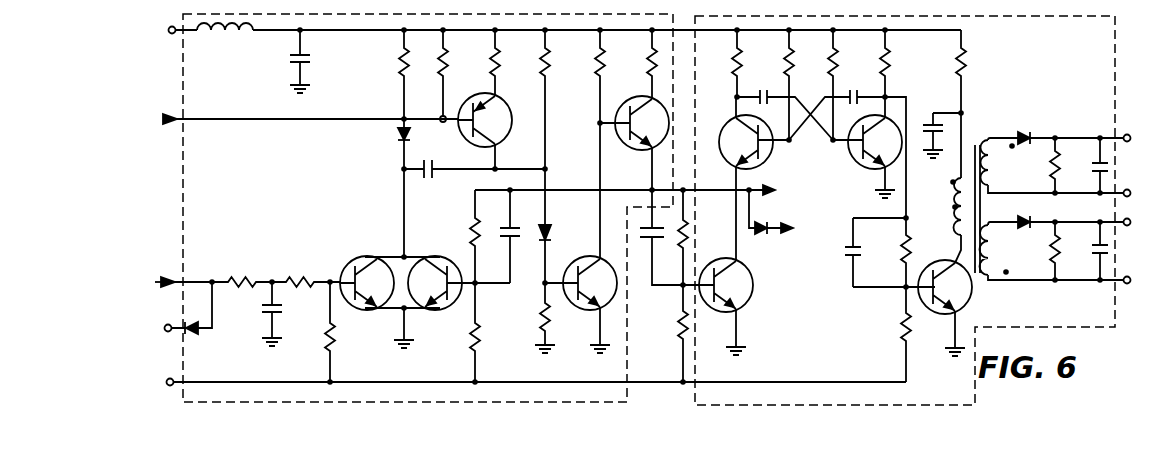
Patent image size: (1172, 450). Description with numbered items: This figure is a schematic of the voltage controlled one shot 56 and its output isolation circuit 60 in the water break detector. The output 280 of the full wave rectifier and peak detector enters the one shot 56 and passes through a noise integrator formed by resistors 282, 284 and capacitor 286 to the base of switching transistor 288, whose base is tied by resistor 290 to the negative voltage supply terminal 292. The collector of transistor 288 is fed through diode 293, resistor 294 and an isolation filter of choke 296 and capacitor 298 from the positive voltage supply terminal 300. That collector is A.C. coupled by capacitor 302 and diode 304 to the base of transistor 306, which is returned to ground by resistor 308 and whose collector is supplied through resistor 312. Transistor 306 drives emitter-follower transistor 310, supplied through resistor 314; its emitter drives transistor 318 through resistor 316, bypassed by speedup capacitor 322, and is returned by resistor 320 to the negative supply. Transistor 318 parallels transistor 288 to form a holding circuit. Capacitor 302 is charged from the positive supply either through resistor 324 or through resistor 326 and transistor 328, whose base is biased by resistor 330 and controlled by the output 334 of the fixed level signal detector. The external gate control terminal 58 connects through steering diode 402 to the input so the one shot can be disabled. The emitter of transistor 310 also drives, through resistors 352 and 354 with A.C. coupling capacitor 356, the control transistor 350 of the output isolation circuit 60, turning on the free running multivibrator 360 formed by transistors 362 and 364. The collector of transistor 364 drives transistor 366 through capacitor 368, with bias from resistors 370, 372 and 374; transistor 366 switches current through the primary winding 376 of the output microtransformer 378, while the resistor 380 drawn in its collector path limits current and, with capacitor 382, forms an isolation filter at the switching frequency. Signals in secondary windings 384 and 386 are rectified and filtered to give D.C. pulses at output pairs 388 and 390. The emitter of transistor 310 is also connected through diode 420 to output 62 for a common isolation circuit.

The voltage controlled one shot 56 is at (388, 401).
The external gate control terminal 58 is at (165, 325).
The output isolation circuit 60 is at (806, 405).
The output 62 is at (784, 227).
The output of the full wave rectifier and peak detector 280 is at (160, 280).
The resistor 282 is at (246, 270).
The resistor 284 is at (306, 270).
The capacitor 286 is at (280, 316).
The switching transistor 288 is at (352, 264).
The resistor 290 is at (336, 334).
The negative voltage supply terminal 292 is at (171, 378).
The diode 293 is at (398, 135).
The resistor 294 is at (400, 62).
The choke 296 is at (225, 41).
The capacitor 298 is at (292, 62).
The positive voltage supply terminal 300 is at (142, 23).
The capacitor 302 is at (430, 182).
The diode 304 is at (549, 233).
The transistor 306 is at (582, 265).
The resistor 308 is at (540, 318).
The emitter-follower transistor 310 is at (634, 111).
The resistor 312 is at (597, 70).
The resistor 314 is at (648, 68).
The resistor 316 is at (474, 234).
The transistor 318 is at (428, 309).
The resistor 320 is at (470, 344).
The speedup capacitor 322 is at (530, 226).
The resistor 324 is at (549, 66).
The resistor 326 is at (498, 70).
The transistor 328 is at (502, 136).
The resistor 330 is at (446, 66).
The output of the fixed level signal detector 334 is at (240, 119).
The control transistor 350 is at (746, 291).
The resistor 352 is at (687, 238).
The resistor 354 is at (678, 324).
The capacitor 356 is at (646, 241).
The free running multivibrator circuit 360 is at (810, 51).
The transistor 362 is at (765, 160).
The transistor 364 is at (856, 160).
The transistor 366 is at (959, 292).
The capacitor 368 is at (845, 252).
The resistor 370 is at (891, 57).
The resistor 372 is at (908, 251).
The resistor 374 is at (904, 326).
The primary winding 376 is at (951, 193).
The output microtransformer 378 is at (978, 141).
The resistor 380 is at (967, 57).
The capacitor 382 is at (927, 120).
The secondary winding 384 is at (1052, 162).
The secondary winding 386 is at (1051, 248).
The output pair 388 is at (1126, 148).
The output pair 390 is at (1126, 230).
The steering diode 402 is at (195, 334).
The diode 420 is at (762, 236).